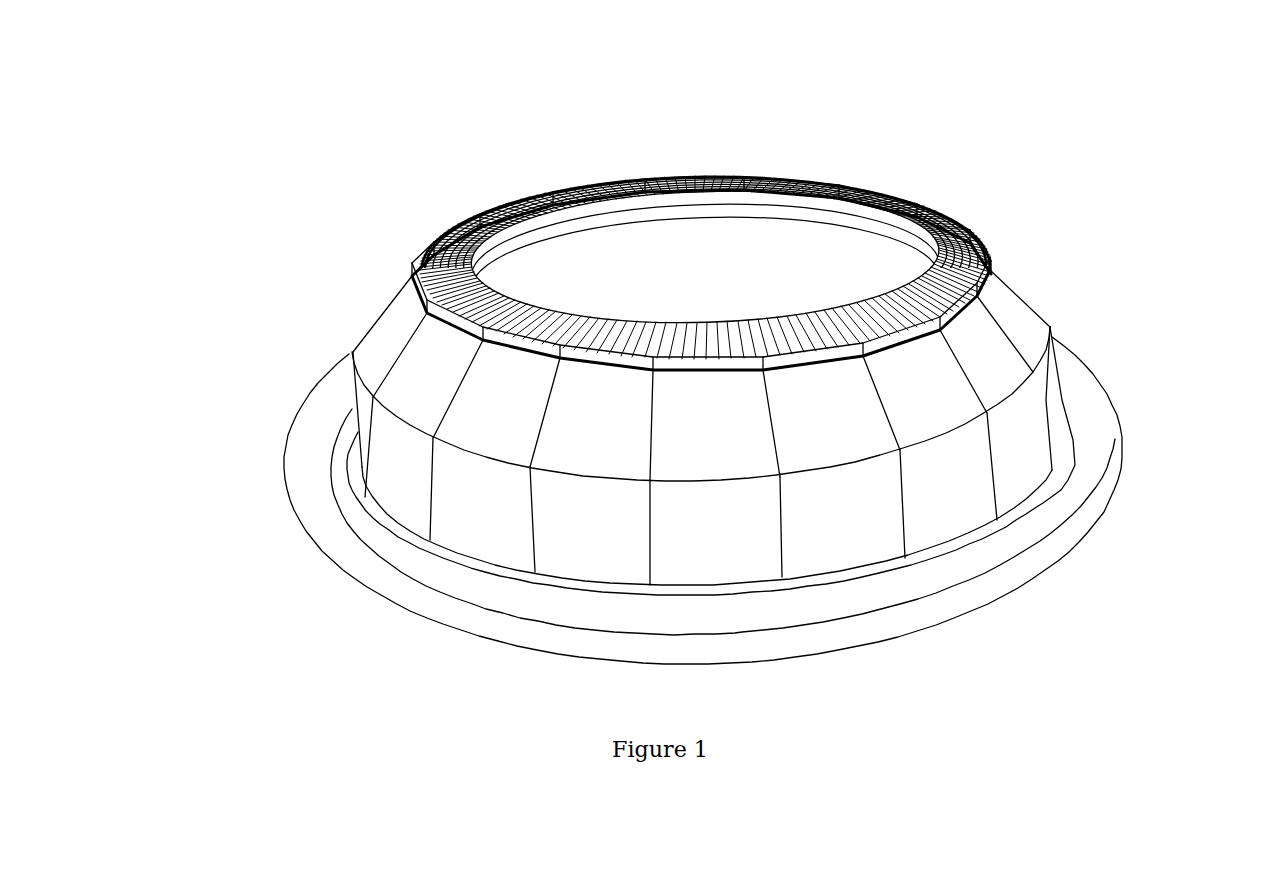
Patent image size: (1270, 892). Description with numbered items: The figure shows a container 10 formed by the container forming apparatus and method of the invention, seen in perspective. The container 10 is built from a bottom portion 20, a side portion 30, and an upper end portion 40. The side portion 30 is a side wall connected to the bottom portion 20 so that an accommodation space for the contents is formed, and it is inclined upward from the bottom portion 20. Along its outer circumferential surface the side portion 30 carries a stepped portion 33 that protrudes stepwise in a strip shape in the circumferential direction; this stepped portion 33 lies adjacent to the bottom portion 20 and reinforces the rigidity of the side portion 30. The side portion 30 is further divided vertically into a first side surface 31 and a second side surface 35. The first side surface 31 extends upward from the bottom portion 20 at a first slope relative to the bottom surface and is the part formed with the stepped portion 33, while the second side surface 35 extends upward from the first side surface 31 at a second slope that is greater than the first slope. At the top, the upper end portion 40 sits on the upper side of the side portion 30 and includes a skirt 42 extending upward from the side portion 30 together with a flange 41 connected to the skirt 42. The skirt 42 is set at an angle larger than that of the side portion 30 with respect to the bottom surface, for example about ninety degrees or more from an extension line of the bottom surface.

The container 10 is at (460, 121).
The bottom portion 20 is at (950, 213).
The side portion 30 is at (1190, 336).
The first side surface 31 is at (987, 352).
The stepped portion 33 is at (997, 280).
The second side surface 35 is at (1027, 438).
The upper end portion 40 is at (217, 398).
The flange 41 is at (310, 438).
The skirt 42 is at (320, 507).